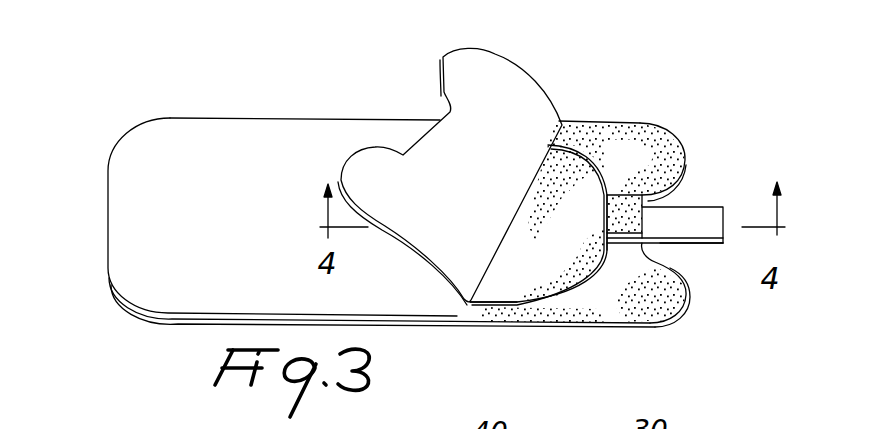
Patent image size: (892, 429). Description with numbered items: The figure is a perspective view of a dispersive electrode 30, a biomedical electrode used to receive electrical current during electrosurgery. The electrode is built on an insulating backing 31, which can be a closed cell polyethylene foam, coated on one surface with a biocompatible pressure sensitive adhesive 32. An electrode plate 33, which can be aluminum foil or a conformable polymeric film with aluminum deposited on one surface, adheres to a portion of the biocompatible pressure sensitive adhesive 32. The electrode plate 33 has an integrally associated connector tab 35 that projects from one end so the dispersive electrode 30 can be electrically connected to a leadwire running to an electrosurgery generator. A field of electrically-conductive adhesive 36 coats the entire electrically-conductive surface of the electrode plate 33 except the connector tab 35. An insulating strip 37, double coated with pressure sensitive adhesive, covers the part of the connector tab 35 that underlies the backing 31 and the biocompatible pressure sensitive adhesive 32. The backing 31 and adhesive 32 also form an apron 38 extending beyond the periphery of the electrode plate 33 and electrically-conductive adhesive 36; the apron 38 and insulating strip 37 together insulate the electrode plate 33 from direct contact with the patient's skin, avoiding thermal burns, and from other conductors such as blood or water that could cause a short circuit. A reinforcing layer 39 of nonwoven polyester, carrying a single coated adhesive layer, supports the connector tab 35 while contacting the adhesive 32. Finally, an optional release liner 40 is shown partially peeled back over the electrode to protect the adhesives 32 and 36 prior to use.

The dispersive electrode 30 is at (287, 123).
The insulating backing 31 is at (182, 326).
The biocompatible pressure sensitive adhesive 32 is at (593, 315).
The electrode plate 33 is at (560, 167).
The connector tab 35 is at (698, 216).
The electrically-conductive adhesive 36 is at (513, 306).
The insulating strip 37 is at (625, 213).
The apron 38 is at (547, 314).
The reinforcing layer 39 is at (703, 247).
The release liner 40 is at (480, 62).